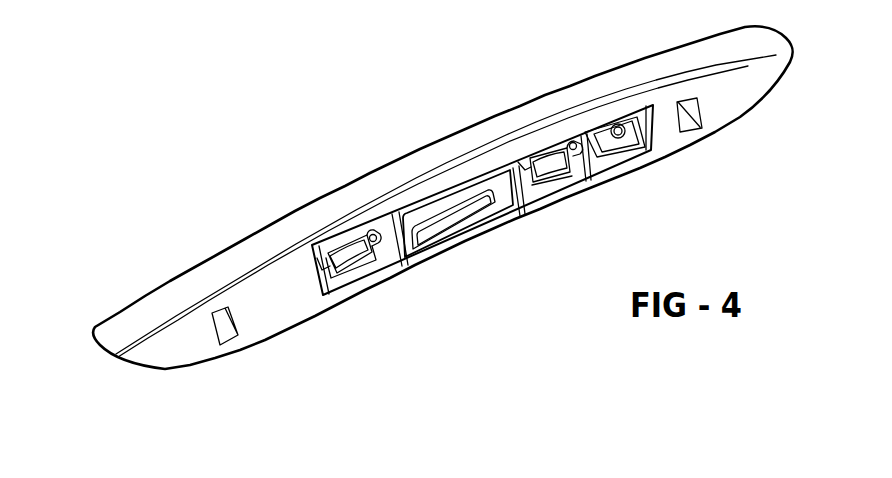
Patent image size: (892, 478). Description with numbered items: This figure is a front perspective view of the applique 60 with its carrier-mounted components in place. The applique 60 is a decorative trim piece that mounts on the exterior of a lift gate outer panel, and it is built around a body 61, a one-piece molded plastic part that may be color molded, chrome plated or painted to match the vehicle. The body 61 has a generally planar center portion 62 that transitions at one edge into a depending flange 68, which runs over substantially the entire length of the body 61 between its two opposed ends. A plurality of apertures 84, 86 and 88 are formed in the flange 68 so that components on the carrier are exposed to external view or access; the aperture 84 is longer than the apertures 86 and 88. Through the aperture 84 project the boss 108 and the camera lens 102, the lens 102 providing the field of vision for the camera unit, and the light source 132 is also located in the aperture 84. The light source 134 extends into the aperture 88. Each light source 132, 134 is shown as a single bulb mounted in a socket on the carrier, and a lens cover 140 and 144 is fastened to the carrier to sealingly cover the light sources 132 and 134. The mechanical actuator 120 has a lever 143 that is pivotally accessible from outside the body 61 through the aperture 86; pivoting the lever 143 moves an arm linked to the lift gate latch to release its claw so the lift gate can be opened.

The applique 60 is at (360, 174).
The body 61 is at (234, 284).
The center portion 62 is at (697, 55).
The depending flange 68 is at (720, 117).
The aperture 84 is at (520, 207).
The aperture 86 is at (488, 212).
The aperture 88 is at (390, 260).
The camera lens 102 is at (620, 136).
The boss 108 is at (607, 124).
The actuator 120 is at (433, 230).
The light source 132 is at (558, 175).
The light source 134 is at (366, 270).
The lens cover 140 is at (575, 152).
The lever 143 is at (458, 216).
The lens cover 144 is at (358, 266).